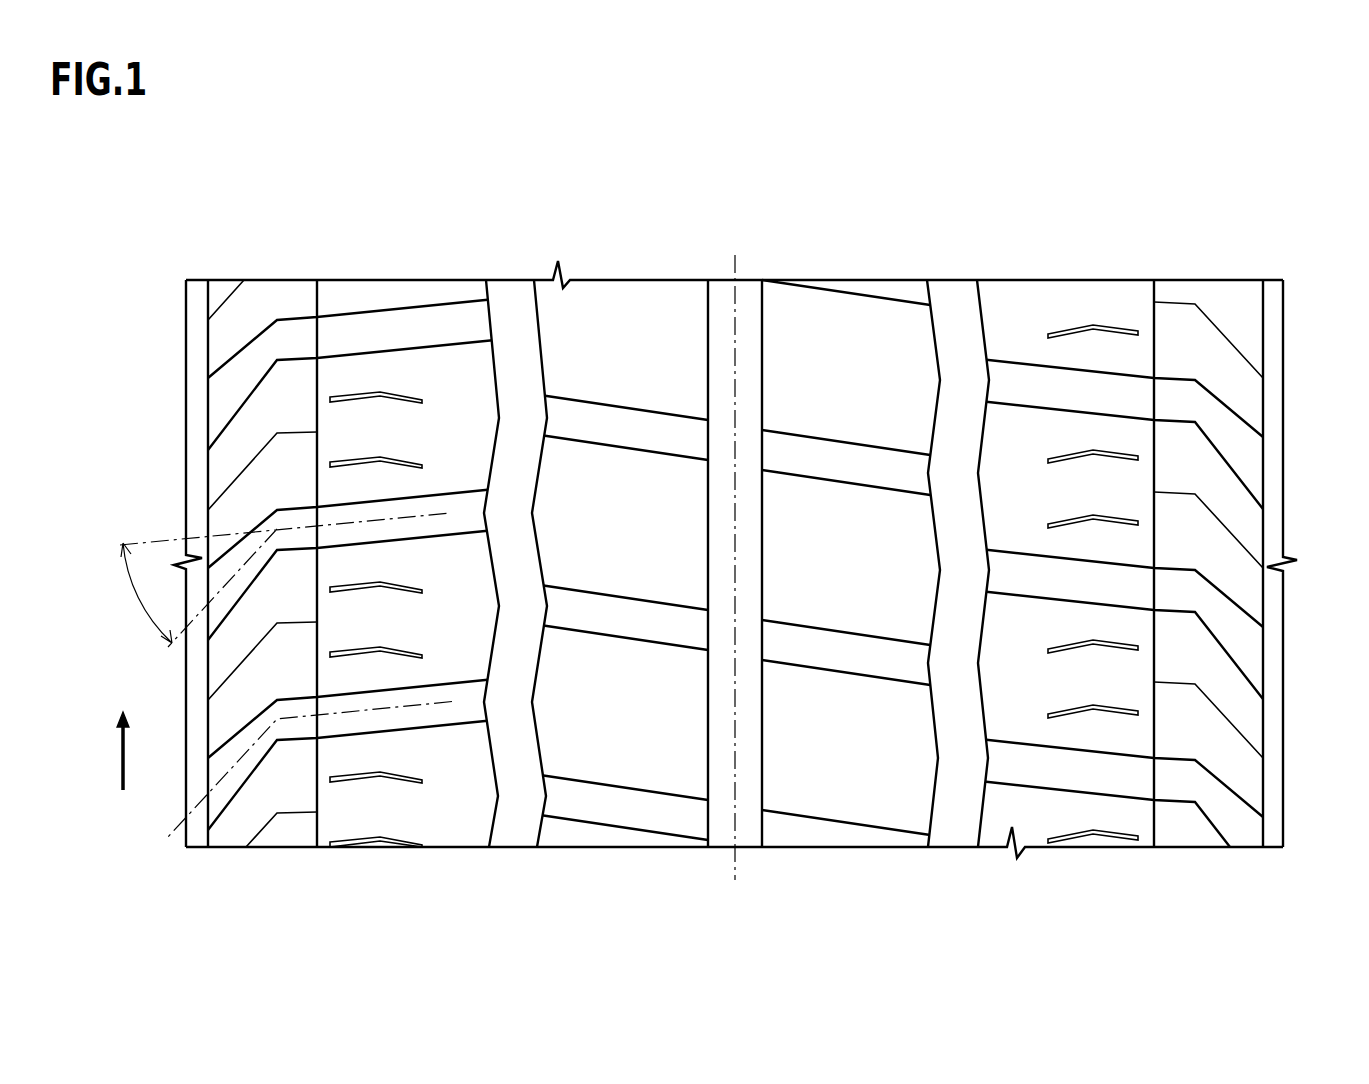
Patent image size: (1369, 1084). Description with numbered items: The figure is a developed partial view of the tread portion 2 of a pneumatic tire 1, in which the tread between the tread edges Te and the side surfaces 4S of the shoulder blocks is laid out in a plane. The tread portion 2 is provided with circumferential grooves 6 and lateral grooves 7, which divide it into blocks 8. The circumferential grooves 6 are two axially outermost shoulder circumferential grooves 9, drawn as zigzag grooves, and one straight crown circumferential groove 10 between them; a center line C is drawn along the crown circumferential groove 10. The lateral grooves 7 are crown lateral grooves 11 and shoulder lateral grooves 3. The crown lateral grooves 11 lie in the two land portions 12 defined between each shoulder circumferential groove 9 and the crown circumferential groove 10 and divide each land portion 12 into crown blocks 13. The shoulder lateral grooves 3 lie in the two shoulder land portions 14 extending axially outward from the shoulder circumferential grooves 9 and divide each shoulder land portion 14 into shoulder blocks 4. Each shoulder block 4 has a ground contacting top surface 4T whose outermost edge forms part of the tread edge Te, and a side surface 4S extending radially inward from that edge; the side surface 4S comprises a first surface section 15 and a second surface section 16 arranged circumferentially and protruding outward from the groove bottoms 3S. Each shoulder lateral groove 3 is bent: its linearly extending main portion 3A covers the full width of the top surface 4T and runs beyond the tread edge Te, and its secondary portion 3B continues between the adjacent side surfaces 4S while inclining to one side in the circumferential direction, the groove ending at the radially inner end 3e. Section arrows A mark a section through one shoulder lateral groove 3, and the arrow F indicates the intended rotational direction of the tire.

The pneumatic tire 1 is at (1207, 190).
The tread portion 2 is at (1259, 222).
The shoulder lateral grooves 3 is at (372, 200).
The main portion 3A is at (383, 327).
The secondary portion 3B is at (252, 360).
The radially inner end 3e is at (207, 817).
The groove bottom 3S is at (237, 773).
The shoulder blocks 4 is at (655, 525).
The ground contacting top surface 4T is at (427, 377).
The side surface 4S is at (655, 563).
The circumferential grooves 6 is at (736, 509).
The lateral grooves 7 is at (700, 541).
The blocks 8 is at (471, 447).
The shoulder circumferential grooves 9 is at (508, 310).
The crown circumferential groove 10 is at (747, 313).
The crown lateral grooves 11 is at (620, 423).
The land portions 12 is at (710, 857).
The crown blocks 13 is at (657, 537).
The shoulder land portions 14 is at (487, 857).
The first surface section 15 is at (248, 435).
The second surface section 16 is at (257, 495).
The tread edge Te is at (317, 397).
The tire equator C is at (736, 549).
The intended rotational direction F is at (120, 752).
The section line A- A is at (452, 702).